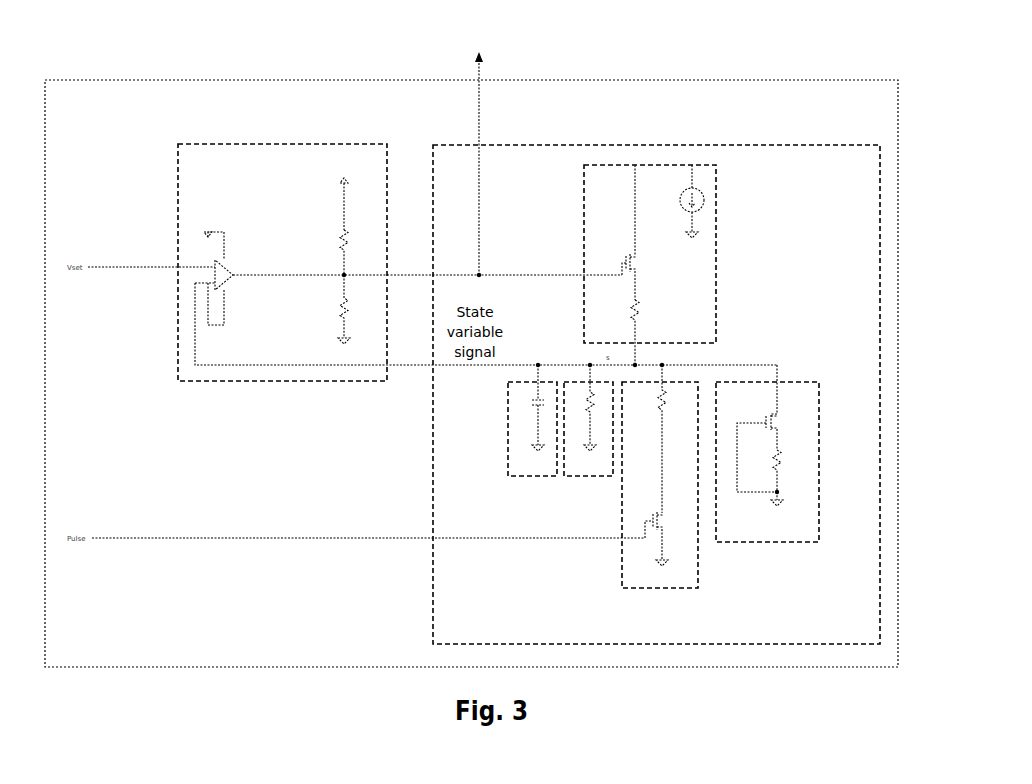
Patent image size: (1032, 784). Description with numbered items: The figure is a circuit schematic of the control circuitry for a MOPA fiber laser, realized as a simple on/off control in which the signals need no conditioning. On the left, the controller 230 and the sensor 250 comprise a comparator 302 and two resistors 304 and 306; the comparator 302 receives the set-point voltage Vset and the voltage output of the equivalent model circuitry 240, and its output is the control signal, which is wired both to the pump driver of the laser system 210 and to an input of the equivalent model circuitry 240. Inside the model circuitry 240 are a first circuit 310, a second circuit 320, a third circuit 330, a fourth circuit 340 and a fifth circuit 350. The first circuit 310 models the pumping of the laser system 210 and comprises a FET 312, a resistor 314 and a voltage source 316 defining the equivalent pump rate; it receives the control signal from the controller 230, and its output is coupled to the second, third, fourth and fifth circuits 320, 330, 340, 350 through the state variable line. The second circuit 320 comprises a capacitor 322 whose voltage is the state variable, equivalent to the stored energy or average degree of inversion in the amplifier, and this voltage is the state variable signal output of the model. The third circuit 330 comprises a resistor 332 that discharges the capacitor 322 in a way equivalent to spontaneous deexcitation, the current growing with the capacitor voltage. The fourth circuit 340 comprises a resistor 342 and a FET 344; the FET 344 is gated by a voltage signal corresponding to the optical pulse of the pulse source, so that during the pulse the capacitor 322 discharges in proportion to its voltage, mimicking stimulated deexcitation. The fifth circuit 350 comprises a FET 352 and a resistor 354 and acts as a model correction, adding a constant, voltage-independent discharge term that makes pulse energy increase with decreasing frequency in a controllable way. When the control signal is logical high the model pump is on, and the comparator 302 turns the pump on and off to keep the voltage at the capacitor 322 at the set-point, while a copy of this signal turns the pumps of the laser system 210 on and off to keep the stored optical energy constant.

The laser system 210 is at (489, 145).
The controller 230 is at (232, 144).
The equivalent model circuitry 240 is at (768, 147).
The sensor 250 is at (827, 33).
The comparator 302 is at (228, 278).
The resistor 304 is at (330, 226).
The resistor 306 is at (333, 309).
The first circuit 310 is at (717, 247).
The FET 312 is at (655, 275).
The resistor 314 is at (626, 332).
The voltage source 316 is at (678, 201).
The second circuit 320 is at (535, 477).
The capacitor 322 is at (533, 408).
The third circuit 330 is at (587, 478).
The resistor 332 is at (596, 408).
The fourth circuit 340 is at (658, 589).
The resistor 342 is at (671, 438).
The FET 344 is at (662, 530).
The fifth circuit 350 is at (767, 543).
The FET 352 is at (770, 428).
The resistor 354 is at (790, 478).